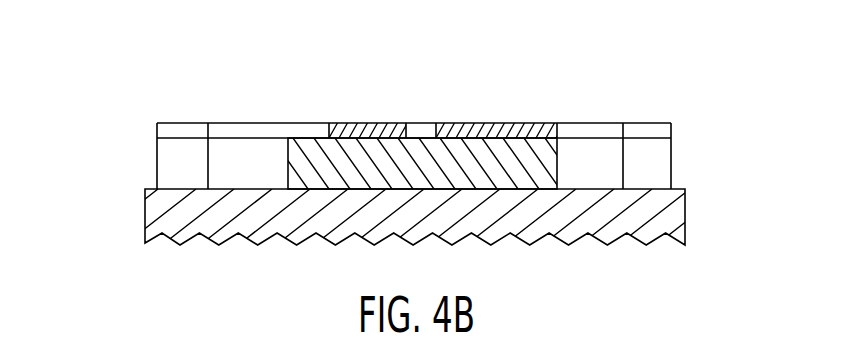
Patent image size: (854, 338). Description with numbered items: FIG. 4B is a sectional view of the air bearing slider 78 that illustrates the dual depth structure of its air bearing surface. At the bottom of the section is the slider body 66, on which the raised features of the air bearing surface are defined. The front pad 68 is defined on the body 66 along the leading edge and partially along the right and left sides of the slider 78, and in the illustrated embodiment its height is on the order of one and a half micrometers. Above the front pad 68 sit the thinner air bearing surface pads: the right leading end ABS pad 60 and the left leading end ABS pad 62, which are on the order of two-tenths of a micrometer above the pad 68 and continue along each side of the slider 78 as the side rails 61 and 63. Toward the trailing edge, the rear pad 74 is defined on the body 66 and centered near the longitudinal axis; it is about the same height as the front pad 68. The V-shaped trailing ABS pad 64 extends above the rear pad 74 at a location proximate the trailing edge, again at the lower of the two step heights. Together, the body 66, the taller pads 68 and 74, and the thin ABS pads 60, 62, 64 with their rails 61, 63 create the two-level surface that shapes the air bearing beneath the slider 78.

The right leading end ABS pad 60 is at (585, 122).
The side rail 61 is at (650, 122).
The left leading end ABS pad 62 is at (303, 123).
The side rail 63 is at (157, 130).
The trailing ABS pad 64 is at (367, 123).
The body 66 is at (685, 212).
The front pad 68 is at (157, 164).
The rear pad 74 is at (465, 167).
The slider 78 is at (117, 243).